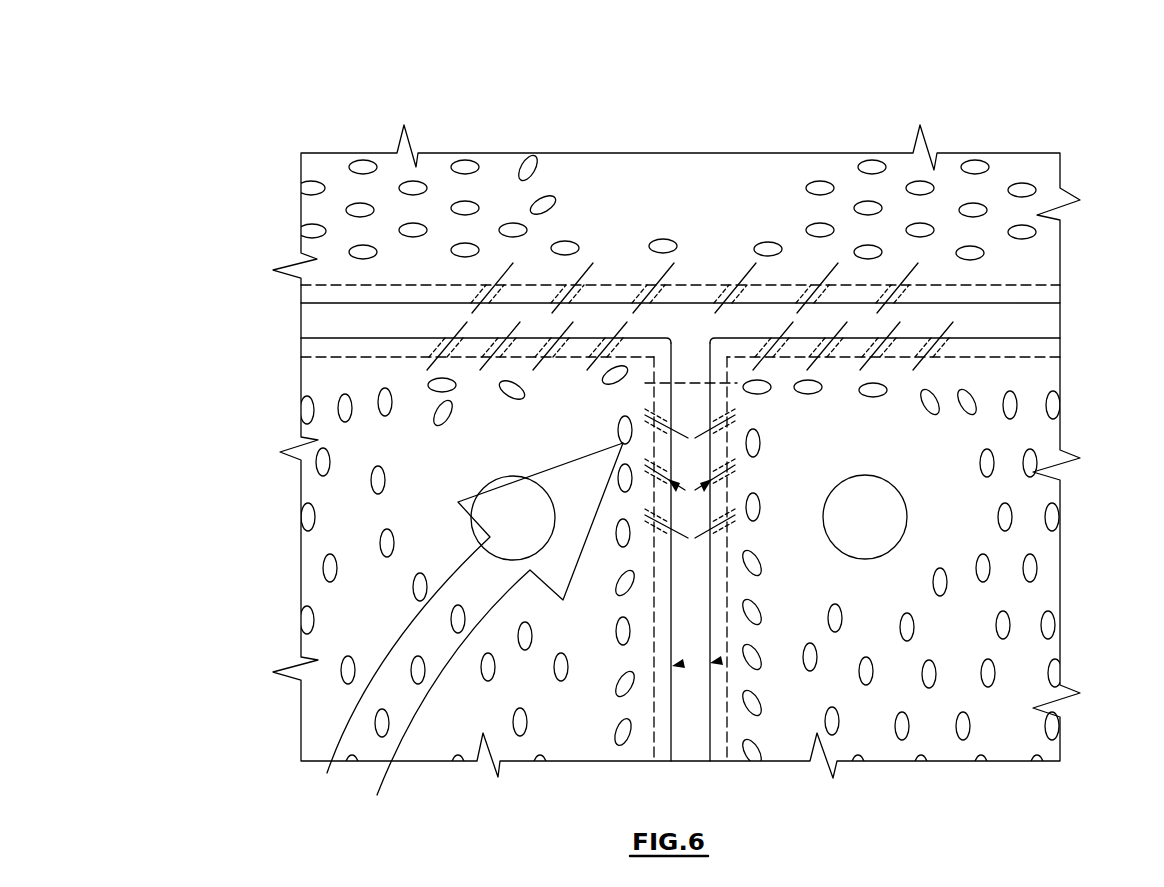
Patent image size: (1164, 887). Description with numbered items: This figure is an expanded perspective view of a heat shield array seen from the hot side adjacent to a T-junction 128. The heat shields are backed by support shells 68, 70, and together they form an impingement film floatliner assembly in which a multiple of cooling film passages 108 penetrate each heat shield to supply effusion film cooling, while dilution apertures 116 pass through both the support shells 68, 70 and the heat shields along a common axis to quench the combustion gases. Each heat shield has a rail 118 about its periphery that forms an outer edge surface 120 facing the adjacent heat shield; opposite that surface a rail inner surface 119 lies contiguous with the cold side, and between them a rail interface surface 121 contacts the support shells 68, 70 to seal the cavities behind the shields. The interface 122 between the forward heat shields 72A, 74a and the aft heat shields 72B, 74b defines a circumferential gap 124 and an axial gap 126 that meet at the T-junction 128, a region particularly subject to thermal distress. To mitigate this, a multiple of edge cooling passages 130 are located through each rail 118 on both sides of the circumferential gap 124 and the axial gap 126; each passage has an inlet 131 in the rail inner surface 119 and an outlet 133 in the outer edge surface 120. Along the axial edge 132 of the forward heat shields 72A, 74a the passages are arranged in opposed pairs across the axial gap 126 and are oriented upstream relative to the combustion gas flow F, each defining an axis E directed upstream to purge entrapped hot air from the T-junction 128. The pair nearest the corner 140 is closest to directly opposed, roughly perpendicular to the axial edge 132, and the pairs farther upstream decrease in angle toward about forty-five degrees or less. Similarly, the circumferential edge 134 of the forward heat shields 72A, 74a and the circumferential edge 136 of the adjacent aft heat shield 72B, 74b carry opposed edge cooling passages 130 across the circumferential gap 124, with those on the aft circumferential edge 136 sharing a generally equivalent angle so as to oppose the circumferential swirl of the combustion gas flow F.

The interface 122 is at (855, 96).
The cooling film passages 108 is at (1020, 192).
The circumferential gap 124 is at (301, 324).
The circumferential edge 136 is at (402, 303).
The circumferential edge 134 is at (385, 345).
The rail 118 is at (997, 350).
The outer edge surface 120 is at (672, 618).
The support shell 68 is at (1042, 328).
The support shell 70 is at (787, 346).
The edge cooling passages 130 is at (907, 293).
The inlet 131 is at (732, 517).
The outlet 133 is at (705, 527).
The axial edge 132 is at (684, 664).
The corner 140 is at (710, 348).
The T-junction 128 is at (690, 300).
The axis E is at (553, 300).
The dilution apertures 116 is at (877, 514).
The combustion gas flow F is at (380, 782).
The aft heat shield 72B is at (301, 213).
The aft heat shield 74b is at (224, 226).
The forward heat shield 72A is at (311, 706).
The forward heat shield 74a is at (241, 718).
The rail interface surface 121 is at (717, 690).
The rail inner surface 119 is at (657, 716).
The axial gap 126 is at (677, 712).